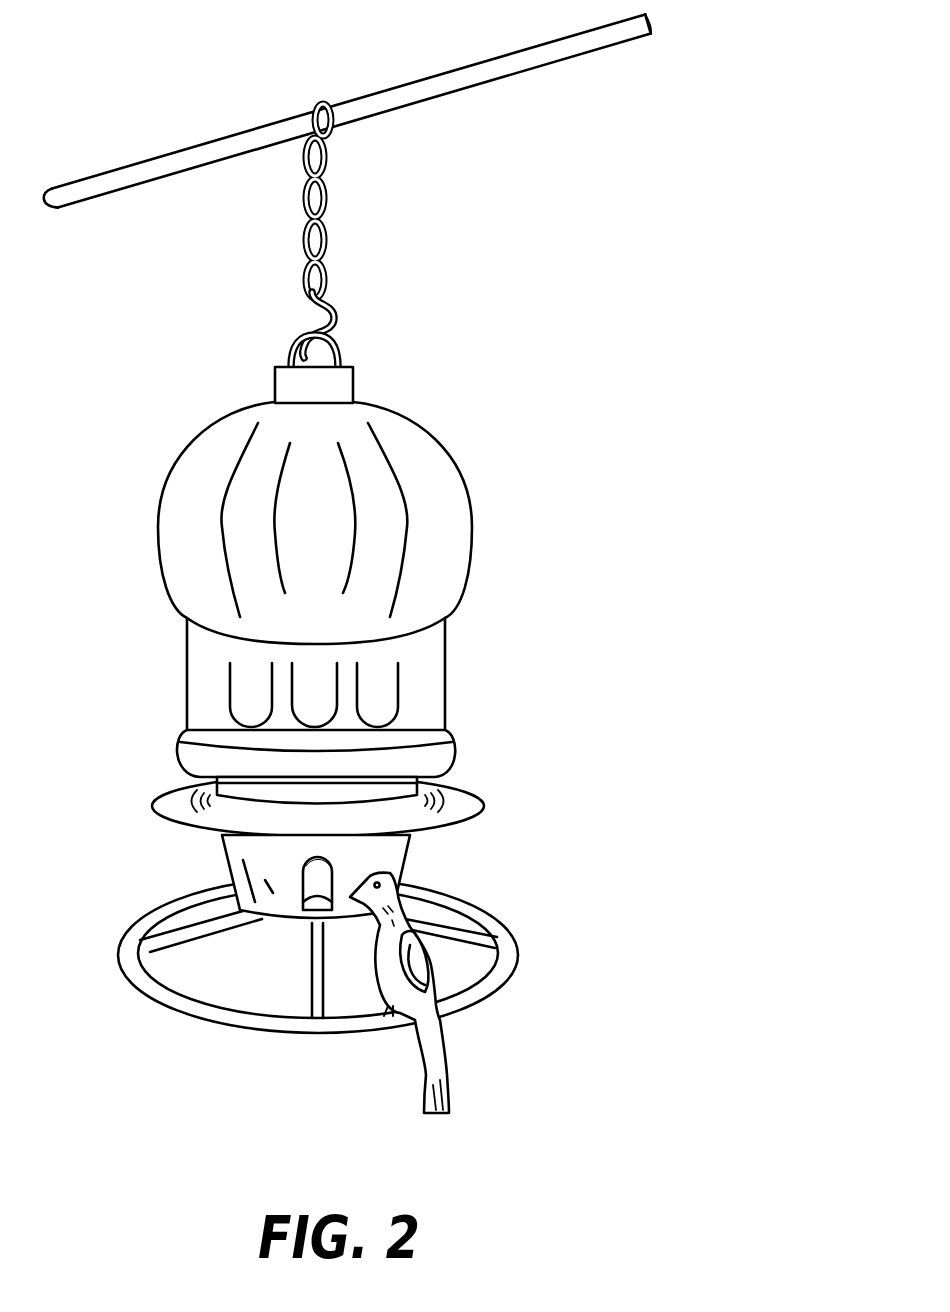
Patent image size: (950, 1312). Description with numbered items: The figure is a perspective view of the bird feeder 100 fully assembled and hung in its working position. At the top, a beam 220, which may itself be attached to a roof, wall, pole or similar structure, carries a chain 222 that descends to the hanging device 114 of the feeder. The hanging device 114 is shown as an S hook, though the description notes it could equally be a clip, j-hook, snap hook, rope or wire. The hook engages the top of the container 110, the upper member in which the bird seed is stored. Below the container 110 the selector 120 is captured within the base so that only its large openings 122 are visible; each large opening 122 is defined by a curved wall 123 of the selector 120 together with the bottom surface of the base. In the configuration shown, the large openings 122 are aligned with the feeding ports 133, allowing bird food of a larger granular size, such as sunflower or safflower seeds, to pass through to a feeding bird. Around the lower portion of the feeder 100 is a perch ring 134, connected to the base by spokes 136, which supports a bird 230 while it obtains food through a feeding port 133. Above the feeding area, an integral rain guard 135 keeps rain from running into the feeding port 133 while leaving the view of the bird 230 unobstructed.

The feeder 100 is at (704, 553).
The container 110 is at (185, 712).
The hanging device 114 is at (325, 292).
The selector 120 is at (222, 853).
The large openings 122 is at (310, 916).
The curved wall 123 is at (321, 878).
The feeding ports 133 is at (250, 909).
The perch ring 134 is at (488, 984).
The rain guard 135 is at (155, 800).
The spokes 136 is at (310, 990).
The beam 220 is at (540, 62).
The chain 222 is at (300, 205).
The bird 230 is at (457, 1099).